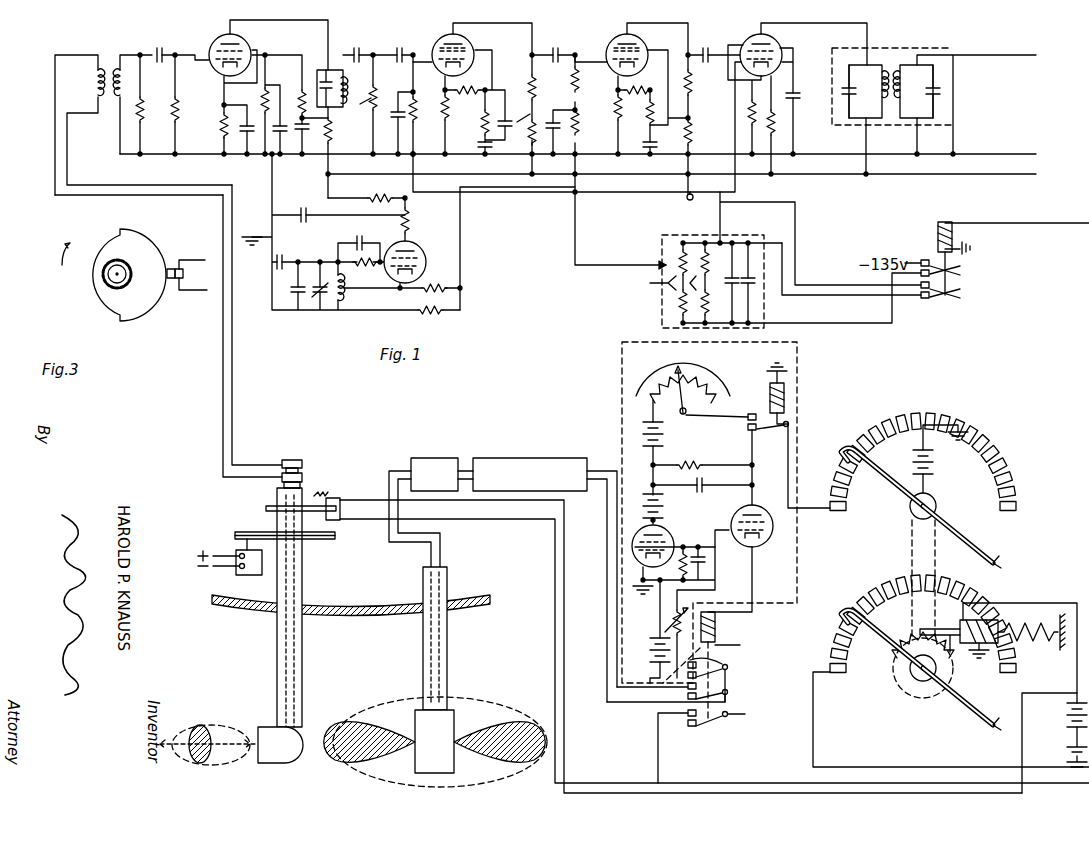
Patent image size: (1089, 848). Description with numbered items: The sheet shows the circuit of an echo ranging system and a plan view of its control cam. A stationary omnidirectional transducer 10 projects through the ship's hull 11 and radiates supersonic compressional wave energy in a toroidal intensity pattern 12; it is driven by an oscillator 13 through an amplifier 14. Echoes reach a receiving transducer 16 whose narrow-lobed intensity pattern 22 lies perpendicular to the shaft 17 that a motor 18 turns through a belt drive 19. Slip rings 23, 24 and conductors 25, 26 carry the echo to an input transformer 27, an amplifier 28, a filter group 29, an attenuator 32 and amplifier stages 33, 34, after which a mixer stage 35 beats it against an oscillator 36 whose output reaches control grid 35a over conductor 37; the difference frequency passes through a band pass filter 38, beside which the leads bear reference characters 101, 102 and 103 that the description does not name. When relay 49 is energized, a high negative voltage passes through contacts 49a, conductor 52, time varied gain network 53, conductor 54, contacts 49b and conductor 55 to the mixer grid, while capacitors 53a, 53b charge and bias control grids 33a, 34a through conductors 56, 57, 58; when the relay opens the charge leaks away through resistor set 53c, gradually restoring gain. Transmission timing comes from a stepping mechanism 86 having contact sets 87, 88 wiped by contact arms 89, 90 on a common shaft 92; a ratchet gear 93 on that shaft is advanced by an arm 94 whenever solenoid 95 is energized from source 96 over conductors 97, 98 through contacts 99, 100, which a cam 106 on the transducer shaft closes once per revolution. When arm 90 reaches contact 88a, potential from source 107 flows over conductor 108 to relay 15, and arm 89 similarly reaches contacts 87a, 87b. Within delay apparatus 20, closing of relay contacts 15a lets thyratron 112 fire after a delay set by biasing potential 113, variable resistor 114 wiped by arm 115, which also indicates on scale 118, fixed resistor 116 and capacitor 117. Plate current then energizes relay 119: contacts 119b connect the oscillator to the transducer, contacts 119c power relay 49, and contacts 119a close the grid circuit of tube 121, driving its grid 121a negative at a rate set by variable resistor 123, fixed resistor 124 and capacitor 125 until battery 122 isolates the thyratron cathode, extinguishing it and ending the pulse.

In FIG. 1, the transducer 10 is at (435, 727).
In FIG. 1, the ship's hull 11 is at (345, 596).
In FIG. 1, the intensity pattern 12 is at (505, 725).
In FIG. 1, the oscillator 13 is at (503, 455).
In FIG. 1, the amplifier 14 is at (432, 455).
In FIG. 1, the relay 15 is at (790, 400).
In FIG. 1, the relay contacts 15a is at (757, 429).
In FIG. 1, the receiving transducer 16 is at (282, 764).
In FIG. 1, the shaft 17 is at (277, 650).
In FIG. 3, the shaft 17 is at (107, 276).
In FIG. 1, the motor 18 is at (236, 572).
In FIG. 1, the belt drive 19 is at (238, 531).
In FIG. 1, the delay apparatus 20 is at (622, 392).
In FIG. 1, the intensity pattern 22 is at (190, 722).
In FIG. 1, the slip ring 23 is at (286, 460).
In FIG. 1, the slip ring 24 is at (303, 478).
In FIG. 1, the conductor 25 is at (222, 346).
In FIG. 1, the conductor 26 is at (230, 362).
In FIG. 1, the input transformer 27 is at (105, 68).
In FIG. 1, the amplifier 28 is at (215, 44).
In FIG. 1, the filter group 29 is at (325, 66).
In FIG. 1, the attenuator 32 is at (340, 118).
In FIG. 1, the amplifier stage 33 is at (434, 40).
In FIG. 1, the control grid 33a is at (462, 62).
In FIG. 1, the amplifier stage 34 is at (610, 40).
In FIG. 1, the control grid 34a is at (636, 62).
In FIG. 1, the mixer stage 35 is at (750, 38).
In FIG. 1, the control grid 35a is at (786, 65).
In FIG. 1, the oscillator 36 is at (413, 260).
In FIG. 1, the conductor 37 is at (613, 195).
In FIG. 1, the band pass filter 38 is at (880, 48).
In FIG. 1, the relay 49 is at (936, 232).
In FIG. 1, the relay contacts 49a is at (960, 272).
In FIG. 1, the relay contacts 49b is at (960, 297).
In FIG. 1, the conductor 52 is at (872, 323).
In FIG. 1, the time varied gain network 53 is at (660, 311).
In FIG. 1, the capacitor 53a is at (734, 247).
In FIG. 1, the capacitor 53b is at (752, 268).
In FIG. 1, the resistor set 53c is at (641, 283).
In FIG. 1, the conductor 54 is at (828, 290).
In FIG. 1, the conductor 55 is at (810, 230).
In FIG. 1, the conductor 56 is at (575, 235).
In FIG. 1, the conductor 57 is at (508, 197).
In FIG. 1, the conductor 58 is at (580, 173).
In FIG. 1, the stepping mechanism 86 is at (1038, 583).
In FIG. 1, the contact set 87 is at (858, 735).
In FIG. 1, the contact 87a is at (832, 668).
In FIG. 1, the contact 87b is at (830, 683).
In FIG. 1, the contact set 88 is at (1012, 520).
In FIG. 1, the contact 88a is at (830, 506).
In FIG. 1, the contact arm 89 is at (880, 640).
In FIG. 1, the contact arm 90 is at (893, 486).
In FIG. 1, the shaft 92 is at (938, 501).
In FIG. 1, the ratchet gear 93 is at (892, 666).
In FIG. 1, the arm 94 is at (970, 645).
In FIG. 1, the solenoid 95 is at (1012, 646).
In FIG. 1, the source 96 is at (1066, 718).
In FIG. 1, the conductor 97 is at (563, 575).
In FIG. 3, the conductor 97 is at (195, 255).
In FIG. 1, the conductor 98 is at (555, 607).
In FIG. 3, the conductor 98 is at (196, 280).
In FIG. 1, the contact 99 is at (326, 500).
In FIG. 3, the contact 99 is at (169, 268).
In FIG. 1, the contact 100 is at (340, 518).
In FIG. 3, the contact 100 is at (177, 280).
In FIG. 1, the output lead 101 is at (1088, 57).
In FIG. 1, the ground lead 102 is at (1088, 157).
In FIG. 1, the supply lead 103 is at (1088, 177).
In FIG. 1, the cam 106 is at (270, 506).
In FIG. 3, the cam 106 is at (97, 308).
In FIG. 1, the source 107 is at (935, 465).
In FIG. 1, the conductor 108 is at (797, 448).
In FIG. 1, the thyratron 112 is at (764, 546).
In FIG. 1, the biasing potential 113 is at (643, 437).
In FIG. 1, the variable resistor 114 is at (717, 428).
In FIG. 1, the arm 115 is at (668, 394).
In FIG. 1, the fixed resistor 116 is at (725, 462).
In FIG. 1, the capacitor 117 is at (702, 490).
In FIG. 1, the scale 118 is at (728, 372).
In FIG. 1, the relay 119 is at (720, 629).
In FIG. 1, the relay contacts 119a is at (729, 680).
In FIG. 1, the relay contacts 119b is at (686, 695).
In FIG. 1, the relay contacts 119c is at (697, 727).
In FIG. 1, the tube 121 is at (638, 535).
In FIG. 1, the grid 121a is at (668, 541).
In FIG. 1, the battery 122 is at (660, 506).
In FIG. 1, the variable resistor 123 is at (665, 616).
In FIG. 1, the fixed resistor 124 is at (702, 568).
In FIG. 1, the capacitor 125 is at (708, 563).